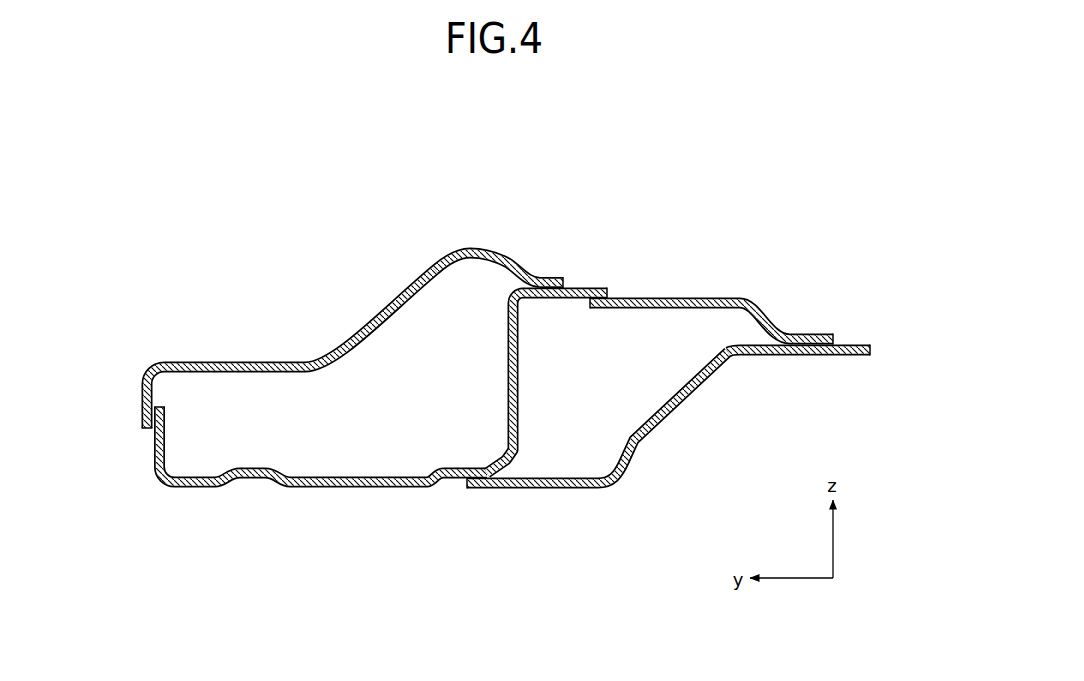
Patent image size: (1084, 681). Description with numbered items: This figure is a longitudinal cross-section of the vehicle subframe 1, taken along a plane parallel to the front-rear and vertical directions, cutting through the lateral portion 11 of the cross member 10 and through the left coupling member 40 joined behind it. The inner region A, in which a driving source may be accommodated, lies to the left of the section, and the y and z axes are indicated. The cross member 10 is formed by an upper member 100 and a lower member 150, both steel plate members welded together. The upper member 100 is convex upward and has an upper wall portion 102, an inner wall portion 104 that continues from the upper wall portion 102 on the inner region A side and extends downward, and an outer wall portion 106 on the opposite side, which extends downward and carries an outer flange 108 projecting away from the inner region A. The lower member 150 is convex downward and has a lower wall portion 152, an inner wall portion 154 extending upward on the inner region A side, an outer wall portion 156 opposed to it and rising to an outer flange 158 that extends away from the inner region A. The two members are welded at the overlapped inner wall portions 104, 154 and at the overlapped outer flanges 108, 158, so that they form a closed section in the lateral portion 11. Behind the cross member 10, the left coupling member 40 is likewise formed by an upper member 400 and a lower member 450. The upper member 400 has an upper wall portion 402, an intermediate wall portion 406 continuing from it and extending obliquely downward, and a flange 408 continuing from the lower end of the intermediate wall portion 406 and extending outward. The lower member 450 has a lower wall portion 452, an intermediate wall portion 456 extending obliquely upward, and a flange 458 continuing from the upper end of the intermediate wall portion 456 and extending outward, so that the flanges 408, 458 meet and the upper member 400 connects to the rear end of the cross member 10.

The subframe 1 is at (745, 157).
The cross member 10 is at (462, 203).
The lateral portion 11 is at (395, 278).
The upper member 100 is at (305, 322).
The upper wall portion 102 is at (218, 362).
The inner wall portion 104 is at (141, 396).
The outer wall portion 106 is at (518, 280).
The outer flange 108 is at (548, 289).
The lower member 150 is at (237, 500).
The lower wall portion 152 is at (283, 488).
The inner wall portion 154 is at (154, 437).
The outer wall portion 156 is at (518, 385).
The outer flange 158 is at (581, 292).
The left coupling member 40 is at (754, 270).
The upper member 400 is at (709, 268).
The upper wall portion 402 is at (627, 298).
The intermediate wall portion 406 is at (768, 313).
The flange 408 is at (808, 335).
The lower member 450 is at (582, 507).
The lower wall portion 452 is at (522, 489).
The intermediate wall portion 456 is at (688, 402).
The flange 458 is at (830, 358).
The inner region A is at (100, 393).